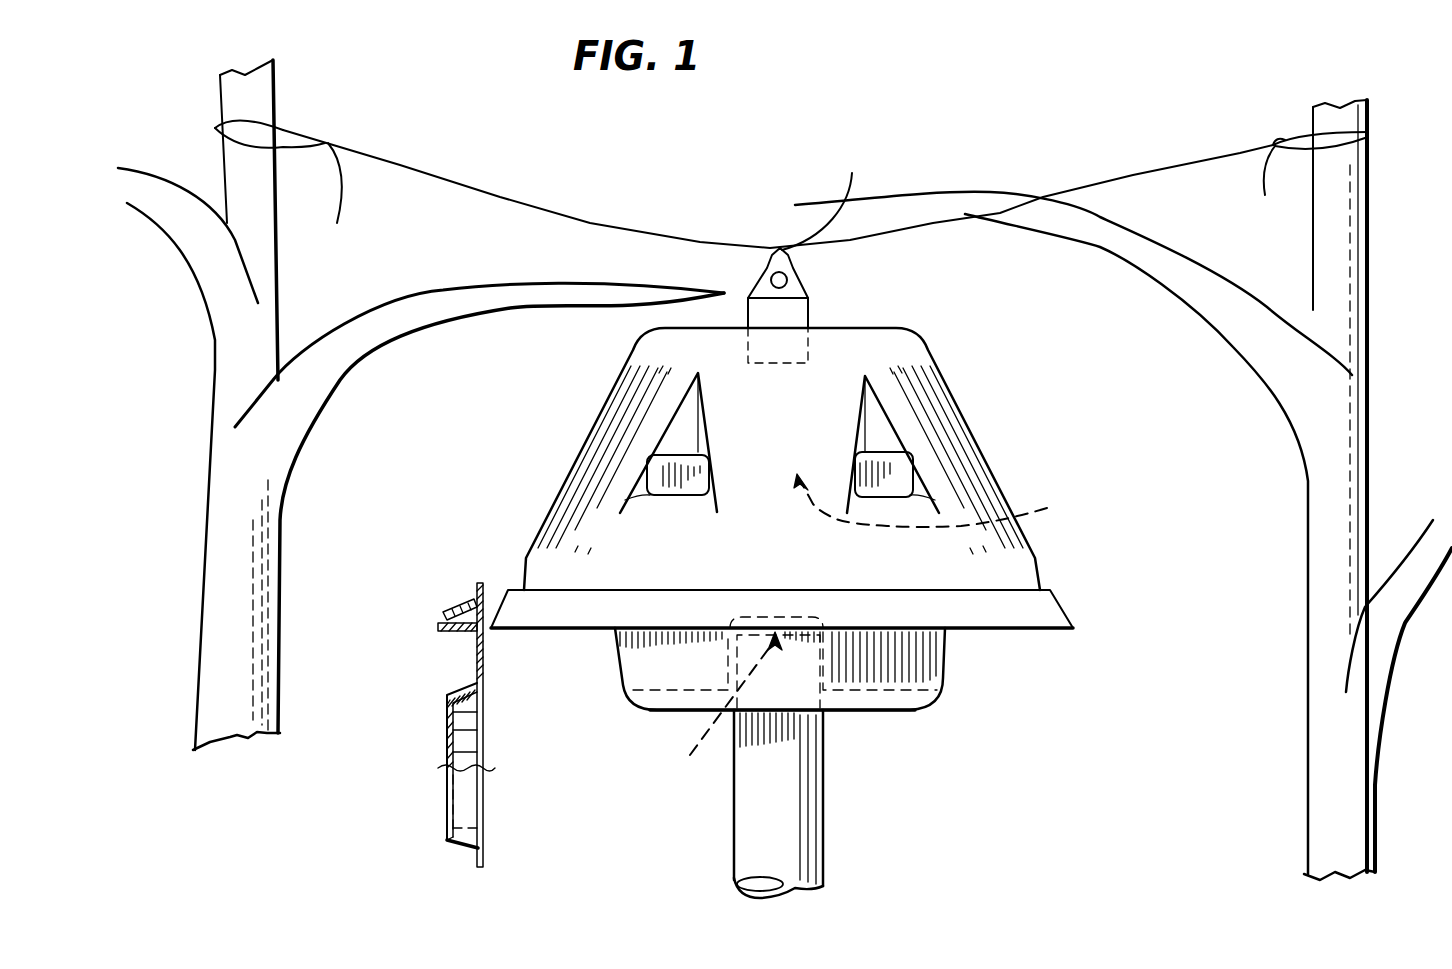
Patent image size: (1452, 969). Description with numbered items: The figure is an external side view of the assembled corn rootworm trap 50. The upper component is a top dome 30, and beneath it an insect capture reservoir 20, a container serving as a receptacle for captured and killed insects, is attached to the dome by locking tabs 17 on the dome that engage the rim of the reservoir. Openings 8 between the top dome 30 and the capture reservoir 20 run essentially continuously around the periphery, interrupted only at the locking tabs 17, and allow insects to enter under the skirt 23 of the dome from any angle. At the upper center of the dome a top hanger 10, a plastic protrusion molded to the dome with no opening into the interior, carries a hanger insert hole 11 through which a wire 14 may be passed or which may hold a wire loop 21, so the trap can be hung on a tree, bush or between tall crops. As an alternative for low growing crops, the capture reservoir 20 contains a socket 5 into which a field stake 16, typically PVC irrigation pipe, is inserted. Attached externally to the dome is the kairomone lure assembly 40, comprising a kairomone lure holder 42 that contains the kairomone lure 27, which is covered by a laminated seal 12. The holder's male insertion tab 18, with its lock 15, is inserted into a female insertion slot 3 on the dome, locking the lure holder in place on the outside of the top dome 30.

The female insertion slot 3 is at (468, 625).
The socket 5 is at (724, 703).
The openings 8 is at (1047, 508).
The top hanger 10 is at (757, 283).
The top hanger insert hole 11 is at (790, 272).
The seal 12 is at (472, 742).
The wire 14 is at (1133, 175).
The lock 15 is at (450, 610).
The field stake 16 is at (730, 801).
The locking tabs 17 is at (643, 477).
The male insertion tab 18 is at (475, 583).
The insect capture reservoir 20 is at (613, 648).
The wire loop 21 is at (830, 194).
The skirt 23 is at (1072, 601).
The kairomone lure 27 is at (462, 803).
The top dome 30 is at (630, 350).
The kairomone lure assembly 40 is at (424, 768).
The kairomone lure holder 42 is at (440, 845).
The assembled trap 50 is at (849, 518).